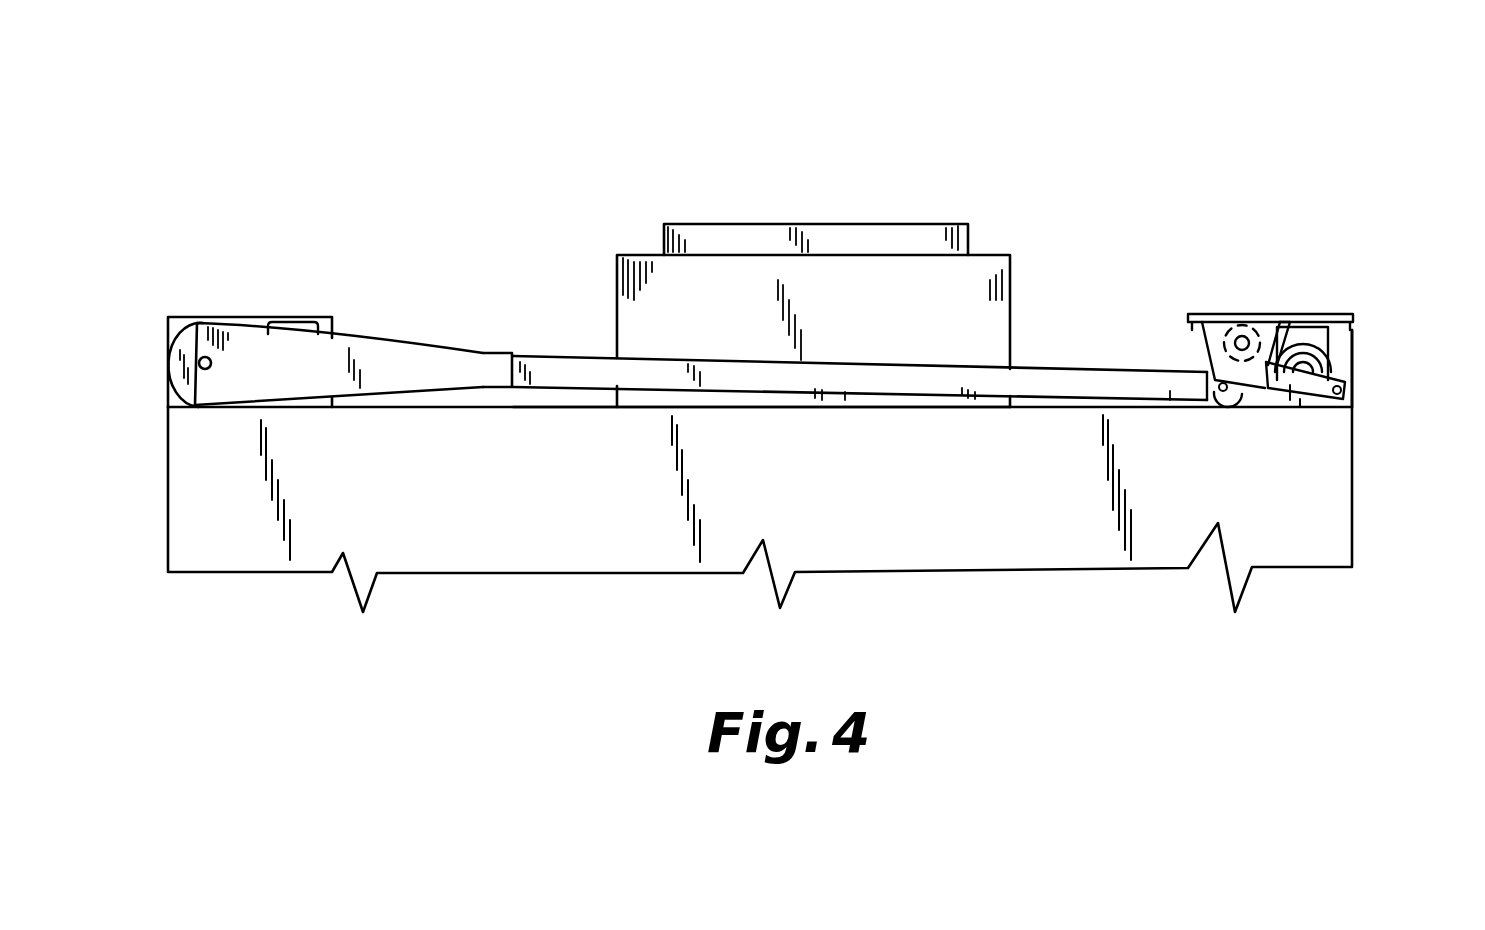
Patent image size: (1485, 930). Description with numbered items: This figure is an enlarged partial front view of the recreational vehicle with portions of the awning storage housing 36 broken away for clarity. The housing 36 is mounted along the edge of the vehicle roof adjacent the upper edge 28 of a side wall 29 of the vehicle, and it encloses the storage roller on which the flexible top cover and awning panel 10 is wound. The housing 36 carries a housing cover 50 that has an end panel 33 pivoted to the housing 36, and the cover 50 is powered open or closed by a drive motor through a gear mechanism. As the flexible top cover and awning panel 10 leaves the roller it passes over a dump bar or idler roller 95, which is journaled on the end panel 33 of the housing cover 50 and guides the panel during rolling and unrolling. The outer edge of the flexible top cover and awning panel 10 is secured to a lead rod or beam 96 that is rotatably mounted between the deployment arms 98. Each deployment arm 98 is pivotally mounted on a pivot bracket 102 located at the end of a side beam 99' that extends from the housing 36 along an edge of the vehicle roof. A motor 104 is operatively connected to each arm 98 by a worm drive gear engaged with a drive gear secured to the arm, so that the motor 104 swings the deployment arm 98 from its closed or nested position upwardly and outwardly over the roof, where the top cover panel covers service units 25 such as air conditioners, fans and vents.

The flexible top cover and awning panel 10 is at (1277, 330).
The service units 25 is at (863, 223).
The upper edge of side wall 28 is at (1353, 395).
The side wall 29 is at (1352, 497).
The end panel 33 is at (1213, 322).
The housing 36 is at (1355, 333).
The housing cover 50 is at (1310, 317).
The dump bar or idler roller 95 is at (1273, 317).
The lead rod or beam 96 is at (1195, 363).
The deployment arm 98 is at (717, 377).
The side beam 99' is at (761, 446).
The pivot bracket 102 is at (337, 323).
The motor 104 is at (302, 330).